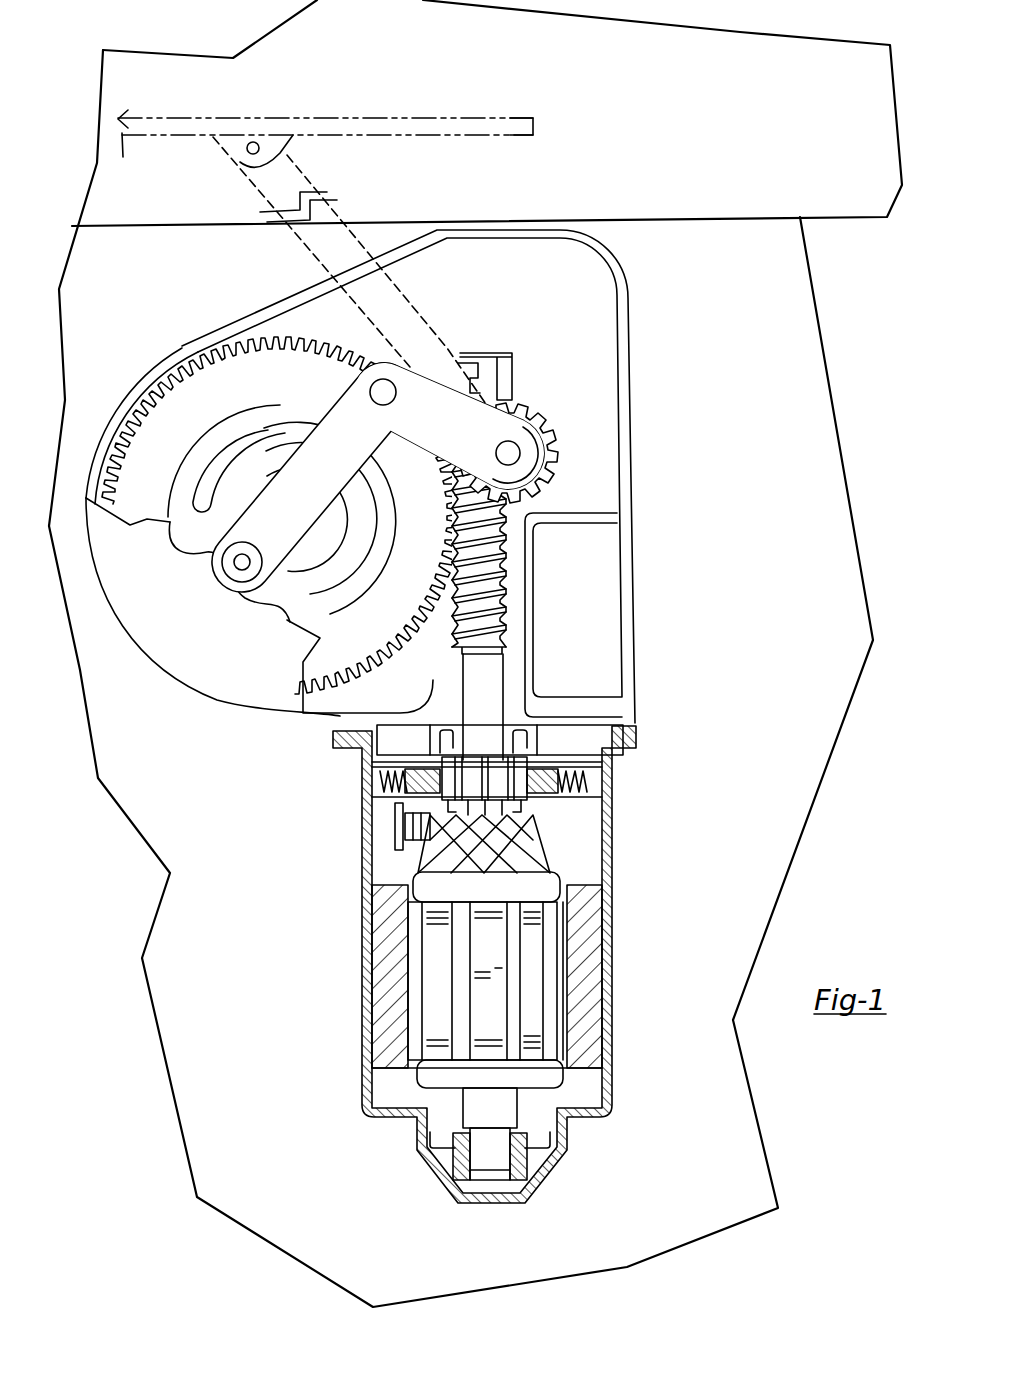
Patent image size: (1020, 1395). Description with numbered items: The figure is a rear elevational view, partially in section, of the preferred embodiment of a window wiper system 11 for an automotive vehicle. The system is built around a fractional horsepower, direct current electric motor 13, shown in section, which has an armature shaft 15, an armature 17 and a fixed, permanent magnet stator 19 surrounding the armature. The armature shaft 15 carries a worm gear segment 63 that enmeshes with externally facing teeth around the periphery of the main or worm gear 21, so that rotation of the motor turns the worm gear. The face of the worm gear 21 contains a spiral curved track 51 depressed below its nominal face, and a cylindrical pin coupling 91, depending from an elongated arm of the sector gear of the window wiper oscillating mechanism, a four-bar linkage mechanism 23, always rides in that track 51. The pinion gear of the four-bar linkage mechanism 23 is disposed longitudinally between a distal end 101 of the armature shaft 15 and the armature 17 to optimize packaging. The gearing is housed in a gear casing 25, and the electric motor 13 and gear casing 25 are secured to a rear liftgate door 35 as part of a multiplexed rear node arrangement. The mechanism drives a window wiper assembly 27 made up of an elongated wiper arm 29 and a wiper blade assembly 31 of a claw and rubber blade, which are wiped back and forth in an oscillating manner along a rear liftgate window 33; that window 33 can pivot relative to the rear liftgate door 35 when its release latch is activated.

The window wiper system 11 is at (288, 987).
The electric motor 13 is at (643, 818).
The armature shaft 15 is at (503, 695).
The armature 17 is at (537, 962).
The permanent magnet stator 19 is at (587, 1033).
The worm gear 21 is at (142, 423).
The four-bar linkage mechanism 23 is at (322, 372).
The gear casing 25 is at (112, 618).
The window wiper assembly 27 is at (216, 235).
The wiper arm 29 is at (393, 297).
The wiper blade assembly 31 is at (340, 123).
The rear liftgate window 33 is at (850, 180).
The rear liftgate door 35 is at (797, 797).
The spiral curved track 51 is at (219, 453).
The worm gear segment 63 is at (497, 537).
The cylindrical pin coupling 91 is at (242, 562).
The distal end 101 is at (492, 355).